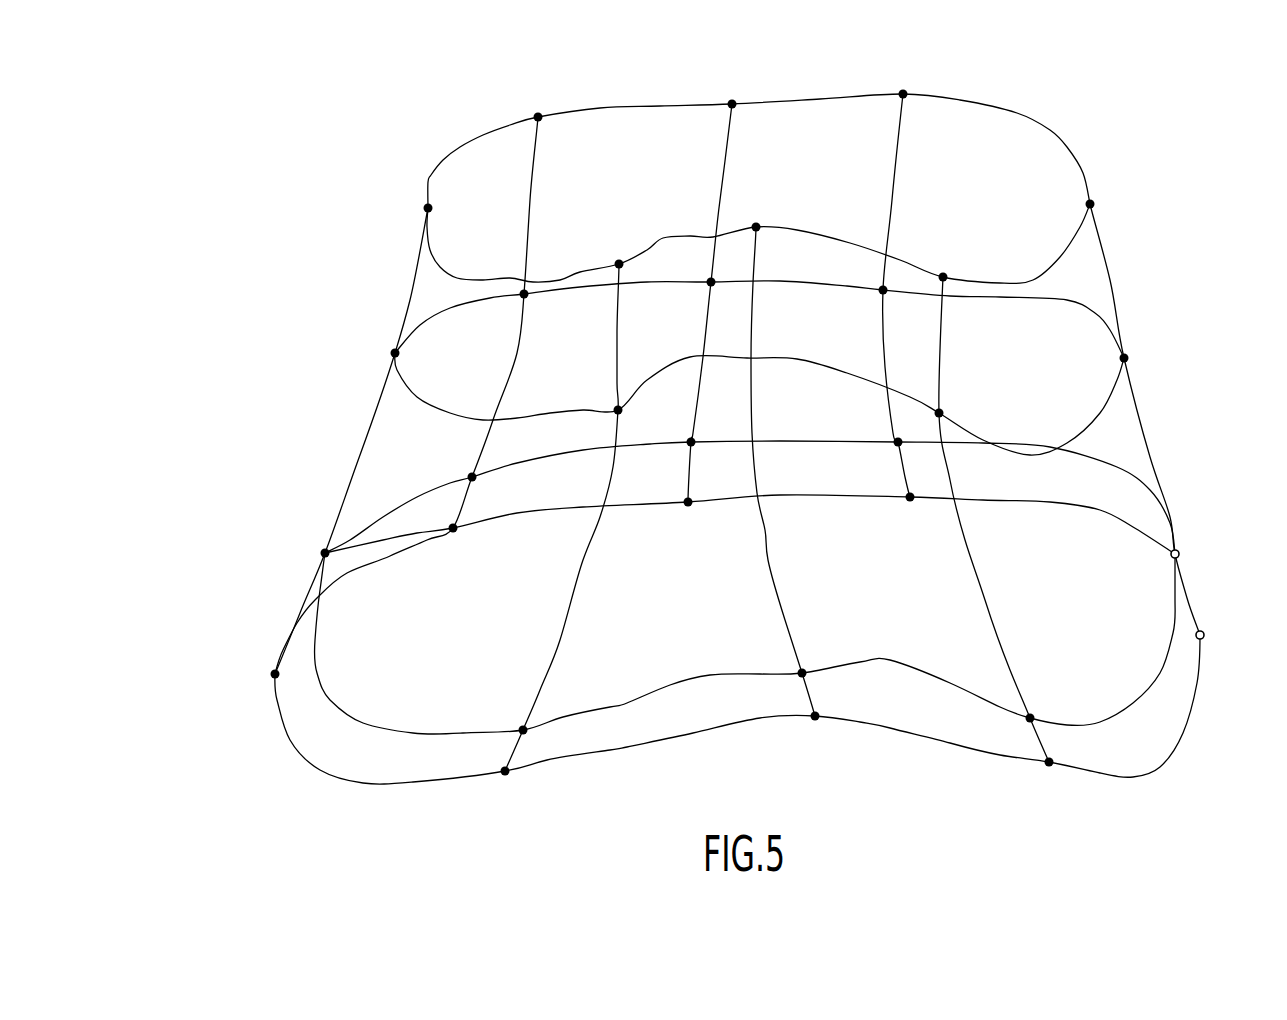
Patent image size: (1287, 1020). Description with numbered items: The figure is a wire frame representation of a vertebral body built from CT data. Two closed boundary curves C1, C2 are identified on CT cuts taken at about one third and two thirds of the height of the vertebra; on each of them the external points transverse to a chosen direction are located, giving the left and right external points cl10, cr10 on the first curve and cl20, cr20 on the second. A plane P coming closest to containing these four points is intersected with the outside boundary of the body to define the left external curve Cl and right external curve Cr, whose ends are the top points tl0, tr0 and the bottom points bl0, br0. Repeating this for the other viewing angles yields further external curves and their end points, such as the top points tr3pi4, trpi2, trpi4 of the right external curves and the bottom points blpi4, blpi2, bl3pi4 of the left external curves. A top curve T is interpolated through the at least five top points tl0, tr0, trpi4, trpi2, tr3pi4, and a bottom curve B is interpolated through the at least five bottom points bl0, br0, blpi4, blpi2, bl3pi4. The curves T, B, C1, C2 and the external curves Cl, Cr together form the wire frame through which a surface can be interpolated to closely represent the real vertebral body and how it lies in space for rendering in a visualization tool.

The top curve T is at (759, 140).
The bottom curve B is at (737, 709).
The boundary curve of the vertebral body on cut 1 C1 is at (759, 368).
The boundary curve of the vertebral body on cut 2 C2 is at (744, 587).
The left external curve Cl is at (351, 441).
The right external curve Cr is at (1145, 419).
The top point of left external curve tl0 is at (396, 211).
The top point of right external curve tr0 is at (1120, 188).
The top point of right external curve at three pi over four tr3pi4 is at (541, 84).
The top point of right external curve at pi over two trpi2 is at (749, 66).
The top point of right external curve at pi over four trpi4 is at (936, 54).
The left external point of curve C1 cl10 is at (363, 357).
The left external point of curve C2 cl20 is at (296, 549).
The right external point of curve C1 cr10 is at (1162, 359).
The right external point of curve C2 cr20 is at (1216, 543).
The bottom point of left external curve bl0 is at (238, 683).
The bottom point of right external curve br0 is at (1237, 636).
The bottom point of left external curve at pi over four blpi4 is at (524, 802).
The bottom point of left external curve at pi over two blpi2 is at (832, 748).
The bottom point of left external curve at three pi over four bl3pi4 is at (1078, 800).